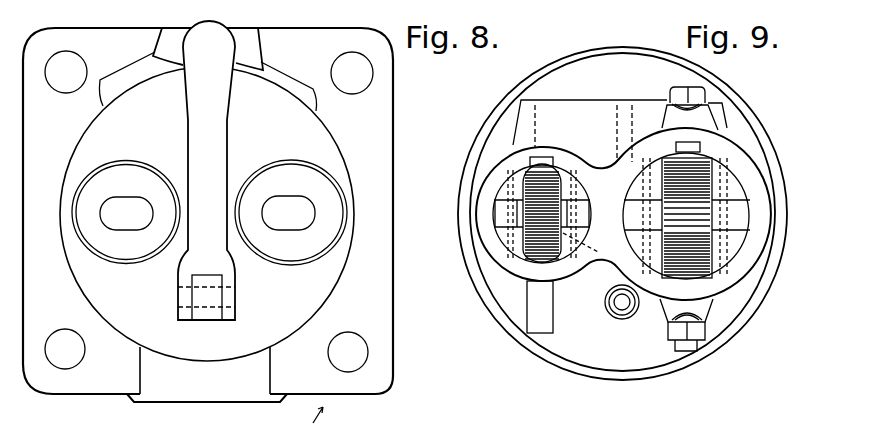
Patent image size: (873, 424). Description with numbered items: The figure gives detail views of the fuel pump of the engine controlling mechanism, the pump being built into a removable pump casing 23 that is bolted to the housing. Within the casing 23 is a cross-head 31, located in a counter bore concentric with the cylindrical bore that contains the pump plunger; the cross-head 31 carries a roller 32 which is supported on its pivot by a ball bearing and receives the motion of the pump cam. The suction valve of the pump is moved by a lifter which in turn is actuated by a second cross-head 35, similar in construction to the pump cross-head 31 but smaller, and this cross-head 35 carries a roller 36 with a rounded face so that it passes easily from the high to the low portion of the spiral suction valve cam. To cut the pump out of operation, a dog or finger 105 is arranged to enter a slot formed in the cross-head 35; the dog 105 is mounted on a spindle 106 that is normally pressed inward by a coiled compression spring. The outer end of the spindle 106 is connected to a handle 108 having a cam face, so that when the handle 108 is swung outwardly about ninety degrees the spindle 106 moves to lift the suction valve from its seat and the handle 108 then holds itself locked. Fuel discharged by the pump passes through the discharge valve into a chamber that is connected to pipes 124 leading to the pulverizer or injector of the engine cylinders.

In FIG. 8, the pump casing 23 is at (208, 211).
In FIG. 9, the pump casing 23 is at (723, 285).
In FIG. 8, the handle 108 is at (224, 128).
In FIG. 8, the spindle 106 is at (205, 320).
In FIG. 9, the spindle 106 is at (622, 306).
In FIG. 8, the pipe 124 is at (201, 409).
In FIG. 9, the cross-head 31 is at (735, 248).
In FIG. 9, the roller 32 is at (662, 157).
In FIG. 9, the roller 36 is at (552, 167).
In FIG. 9, the cross-head 35 is at (517, 247).
In FIG. 9, the dog 105 is at (598, 280).